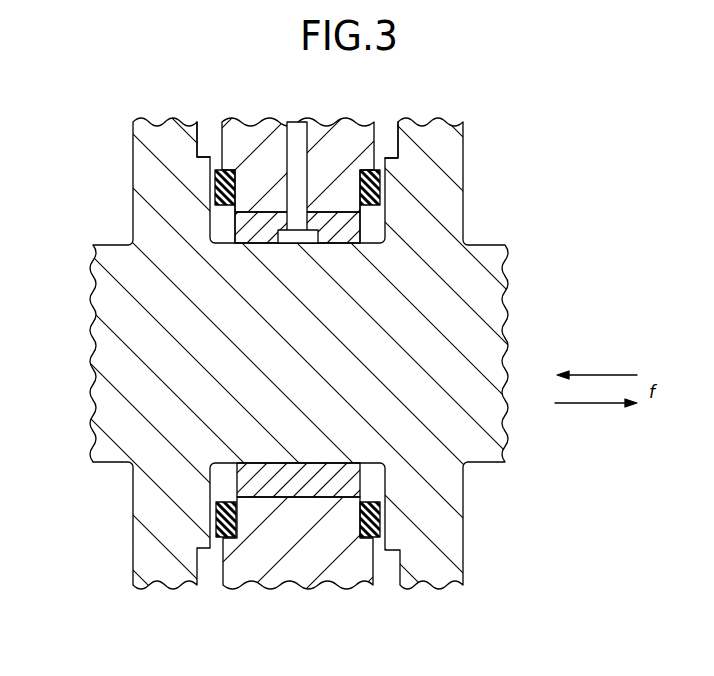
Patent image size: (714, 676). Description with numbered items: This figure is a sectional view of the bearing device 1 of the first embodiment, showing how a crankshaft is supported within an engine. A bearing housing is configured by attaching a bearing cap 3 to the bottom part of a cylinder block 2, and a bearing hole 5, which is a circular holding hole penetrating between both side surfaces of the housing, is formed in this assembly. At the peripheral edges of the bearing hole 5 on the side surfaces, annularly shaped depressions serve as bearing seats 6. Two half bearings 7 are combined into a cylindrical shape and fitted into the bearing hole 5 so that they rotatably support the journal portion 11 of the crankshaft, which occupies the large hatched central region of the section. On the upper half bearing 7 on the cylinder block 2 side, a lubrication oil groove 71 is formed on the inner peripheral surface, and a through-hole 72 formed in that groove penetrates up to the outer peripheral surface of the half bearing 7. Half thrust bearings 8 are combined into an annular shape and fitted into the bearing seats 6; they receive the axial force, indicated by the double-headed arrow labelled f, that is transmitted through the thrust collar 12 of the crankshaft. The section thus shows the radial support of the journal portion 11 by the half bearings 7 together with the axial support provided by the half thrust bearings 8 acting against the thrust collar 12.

The bearing device 1 is at (518, 153).
The cylinder block 2 is at (252, 132).
The bearing cap 3 is at (286, 582).
The bearing hole 5 is at (263, 230).
The bearing seat 6 is at (380, 188).
The half bearing 7 is at (361, 222).
The half thrust bearing 8 is at (224, 206).
The journal portion 11 is at (245, 389).
The thrust collar 12 is at (209, 157).
The lubrication oil groove 71 is at (301, 240).
The through-hole 72 is at (300, 222).